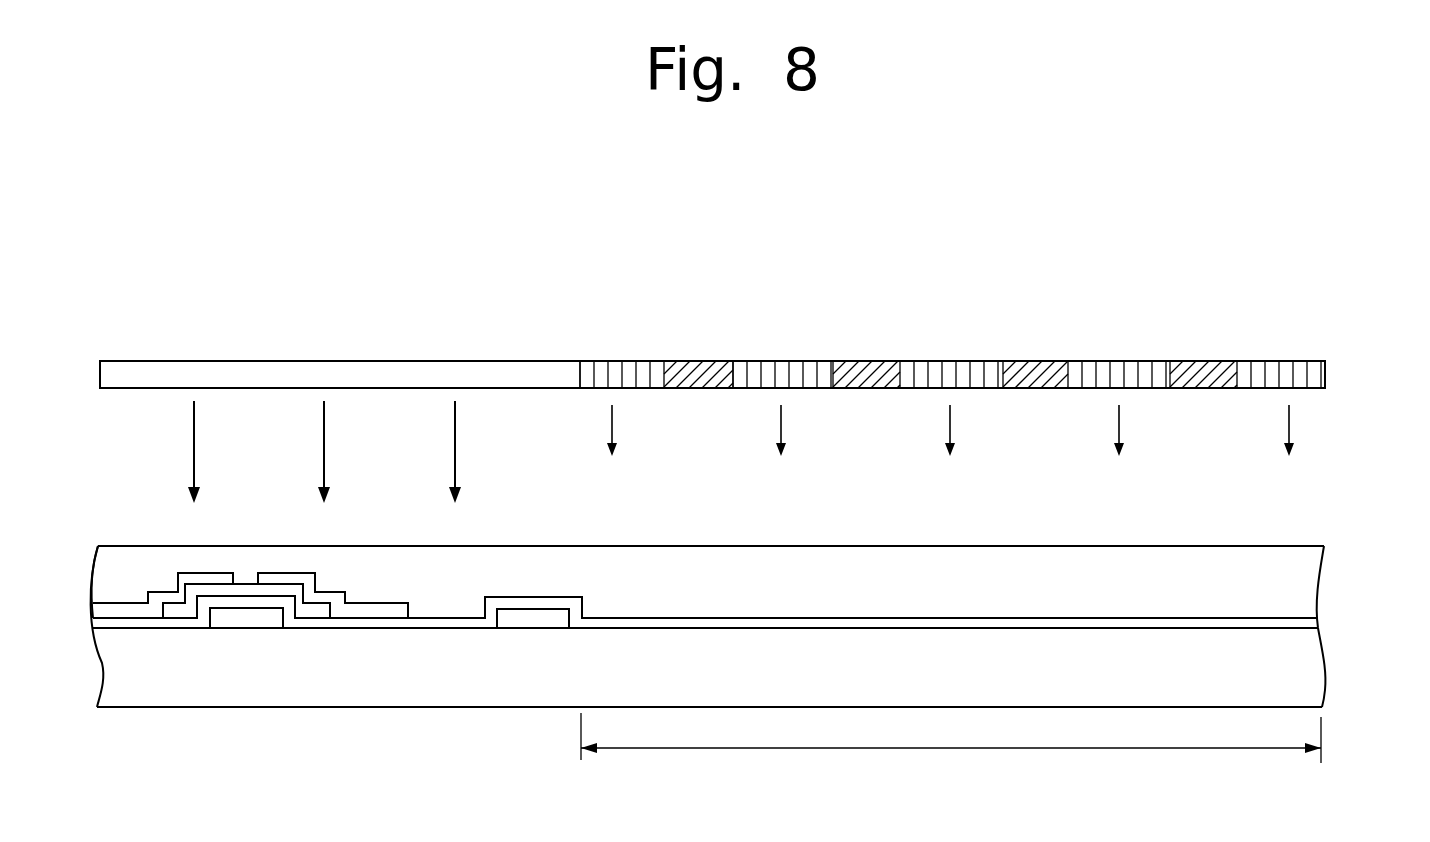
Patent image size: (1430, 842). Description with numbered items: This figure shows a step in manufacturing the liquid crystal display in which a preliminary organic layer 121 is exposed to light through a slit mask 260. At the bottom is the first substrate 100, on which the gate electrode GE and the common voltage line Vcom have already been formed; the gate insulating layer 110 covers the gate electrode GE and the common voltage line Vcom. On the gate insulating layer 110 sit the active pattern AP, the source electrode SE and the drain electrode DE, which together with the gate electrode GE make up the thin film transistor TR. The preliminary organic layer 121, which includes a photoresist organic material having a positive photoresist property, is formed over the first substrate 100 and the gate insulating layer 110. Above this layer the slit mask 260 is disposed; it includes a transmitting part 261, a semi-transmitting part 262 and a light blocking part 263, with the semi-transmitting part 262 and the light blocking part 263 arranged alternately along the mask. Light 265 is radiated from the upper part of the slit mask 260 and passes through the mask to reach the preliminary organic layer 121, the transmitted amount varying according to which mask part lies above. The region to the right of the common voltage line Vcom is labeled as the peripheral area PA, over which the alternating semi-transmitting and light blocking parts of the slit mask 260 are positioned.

The slit mask 260 is at (712, 307).
The transmitting part 261 is at (533, 361).
The semi-transmitting part 262 is at (617, 361).
The light blocking part 263 is at (698, 336).
The light 265 is at (193, 446).
The first substrate 100 is at (1310, 681).
The gate insulating layer 110 is at (1310, 627).
The preliminary organic layer 121 is at (1310, 583).
The thin film transistor TR is at (250, 701).
The gate electrode GE is at (252, 618).
The active pattern AP is at (178, 608).
The source electrode SE is at (133, 610).
The drain electrode DE is at (333, 674).
The common voltage line Vcom is at (522, 618).
The peripheral area PA is at (951, 750).